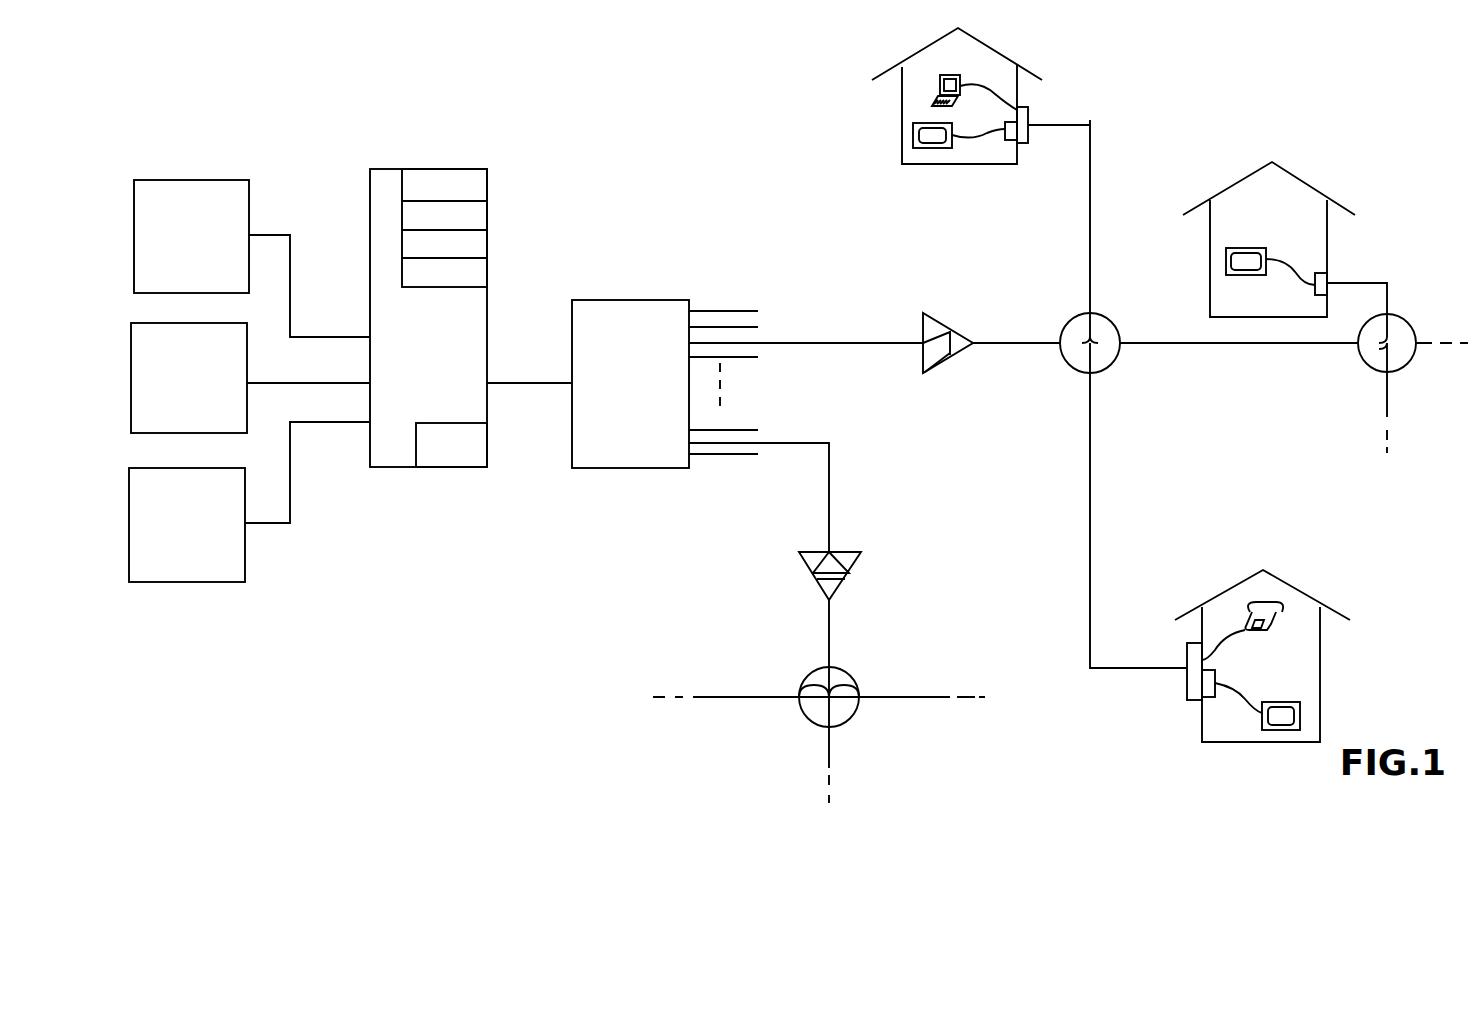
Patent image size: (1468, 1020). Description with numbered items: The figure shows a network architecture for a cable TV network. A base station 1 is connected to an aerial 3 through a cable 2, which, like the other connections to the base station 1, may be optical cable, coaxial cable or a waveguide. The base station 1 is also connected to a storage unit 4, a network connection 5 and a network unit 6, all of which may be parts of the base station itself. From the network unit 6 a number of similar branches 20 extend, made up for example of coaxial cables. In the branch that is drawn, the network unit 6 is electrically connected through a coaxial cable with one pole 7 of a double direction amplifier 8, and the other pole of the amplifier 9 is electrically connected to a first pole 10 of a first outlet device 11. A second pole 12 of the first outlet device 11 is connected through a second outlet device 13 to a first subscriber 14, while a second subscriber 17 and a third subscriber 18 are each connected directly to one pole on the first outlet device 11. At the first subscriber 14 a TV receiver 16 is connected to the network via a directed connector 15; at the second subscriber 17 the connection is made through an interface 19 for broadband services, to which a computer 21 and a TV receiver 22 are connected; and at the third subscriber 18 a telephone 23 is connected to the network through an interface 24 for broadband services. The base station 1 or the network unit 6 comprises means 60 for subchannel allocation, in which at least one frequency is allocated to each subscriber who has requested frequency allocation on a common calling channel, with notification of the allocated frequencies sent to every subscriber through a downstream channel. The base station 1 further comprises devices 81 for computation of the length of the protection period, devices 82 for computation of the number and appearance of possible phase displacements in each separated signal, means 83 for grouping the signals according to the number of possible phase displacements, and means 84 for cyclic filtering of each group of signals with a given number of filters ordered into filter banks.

The base station 1 is at (401, 467).
The cable 2 is at (290, 252).
The aerial 3 is at (249, 184).
The storage unit 4 is at (247, 361).
The network connection 5 is at (236, 489).
The network unit 6 is at (601, 300).
The pole of double direction amplifier 7 is at (923, 336).
The double direction amplifier 8 is at (932, 360).
The other pole of the amplifier 9 is at (973, 336).
The first pole of first outlet device 10 is at (1062, 352).
The first outlet device 11 is at (1108, 358).
The second pole of first outlet device 12 is at (1119, 337).
The second outlet device 13 is at (1366, 358).
The first subscriber 14 is at (1310, 200).
The directed connector 15 is at (1315, 295).
The TV receiver 16 is at (1230, 248).
The second subscriber 17 is at (975, 50).
The third subscriber 18 is at (1313, 655).
The interface for broadband services 19 is at (1030, 100).
The branches 20 is at (731, 311).
The computer 21 is at (940, 85).
The TV receiver 22 is at (913, 138).
The telephone 23 is at (1266, 604).
The interface for broadband services 24 is at (1187, 690).
The means for subchannel allocation 60 is at (471, 467).
The devices for computation of the length of the protection period 81 is at (487, 188).
The devices for computation of phase displacements 82 is at (487, 218).
The means for grouping the signals 83 is at (481, 250).
The means for cyclic filtering 84 is at (487, 278).